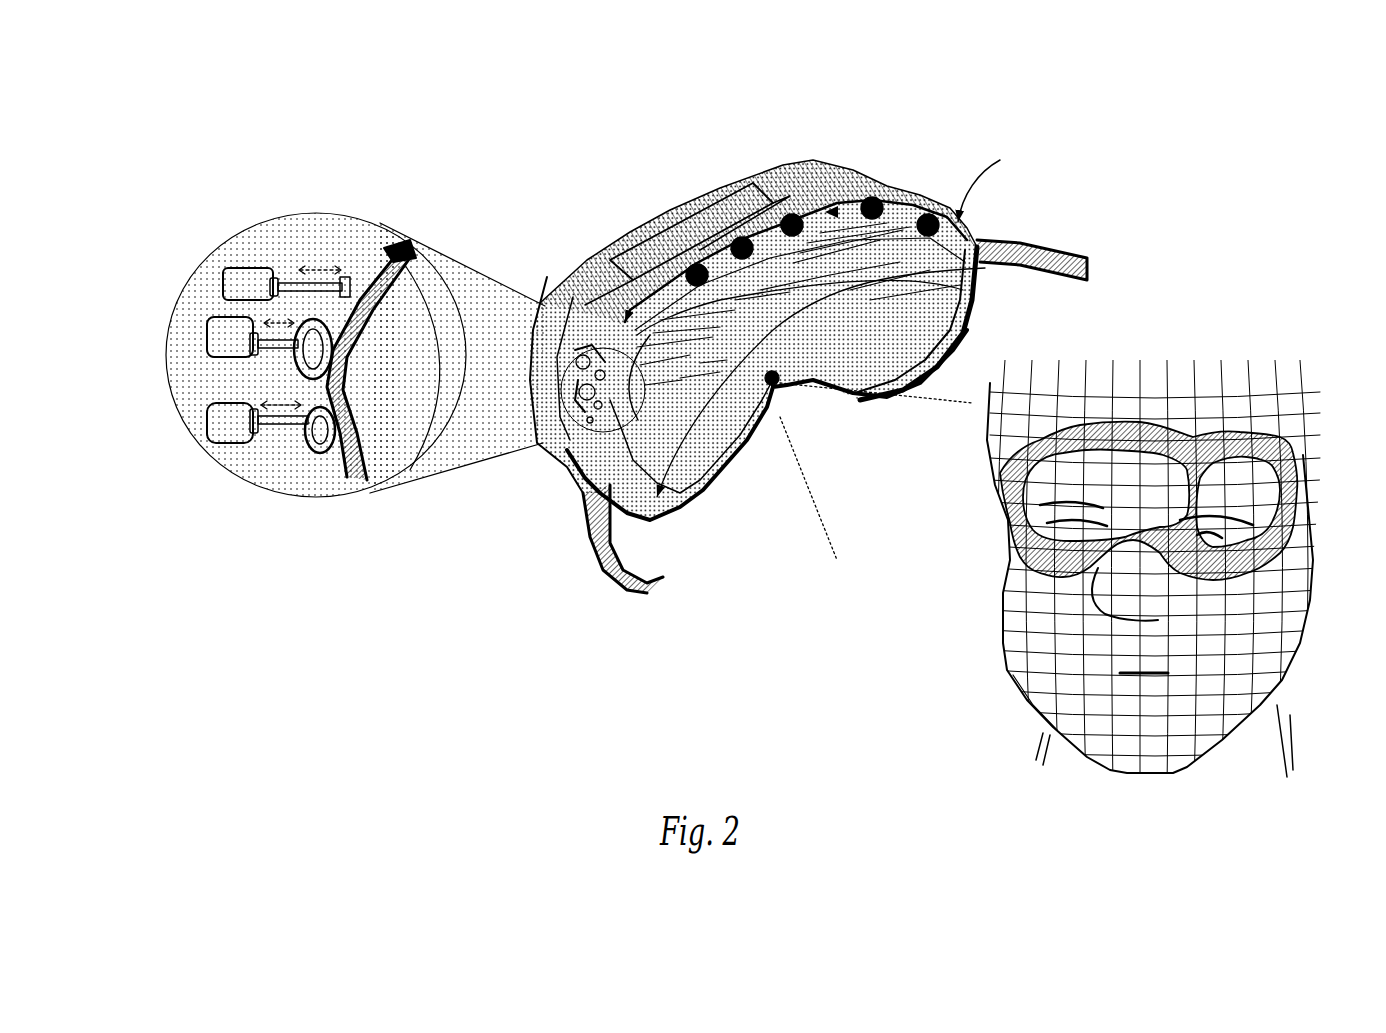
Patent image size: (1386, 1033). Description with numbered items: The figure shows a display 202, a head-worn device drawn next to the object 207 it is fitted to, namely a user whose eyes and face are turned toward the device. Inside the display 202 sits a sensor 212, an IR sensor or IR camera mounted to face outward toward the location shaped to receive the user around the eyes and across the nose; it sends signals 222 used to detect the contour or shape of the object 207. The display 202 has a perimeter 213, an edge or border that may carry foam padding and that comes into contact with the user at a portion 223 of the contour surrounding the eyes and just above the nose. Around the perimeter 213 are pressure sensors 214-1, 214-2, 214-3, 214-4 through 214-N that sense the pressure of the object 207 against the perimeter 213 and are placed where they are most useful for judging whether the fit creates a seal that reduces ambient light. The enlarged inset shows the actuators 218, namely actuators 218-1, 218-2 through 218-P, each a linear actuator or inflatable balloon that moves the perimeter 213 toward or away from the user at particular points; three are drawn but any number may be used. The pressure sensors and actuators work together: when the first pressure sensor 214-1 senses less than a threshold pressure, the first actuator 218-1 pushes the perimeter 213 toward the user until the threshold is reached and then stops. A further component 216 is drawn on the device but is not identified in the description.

The display 202 is at (1025, 95).
The object 207 is at (1243, 320).
The sensor 212 is at (777, 400).
The perimeter 213 is at (867, 390).
The first pressure sensor 214-1 is at (697, 265).
The pressure sensor 214-2 is at (743, 238).
The pressure sensor 214-3 is at (793, 215).
The pressure sensor 214-4 is at (871, 199).
The pressure sensor 214-N is at (920, 214).
The processing module 216 is at (623, 240).
The actuator array strip 218 is at (713, 196).
The first actuator 218-1 is at (227, 277).
The actuator 218-2 is at (205, 333).
The actuator 218-P is at (223, 410).
The signals 222 is at (805, 507).
The portion 223 is at (1060, 557).